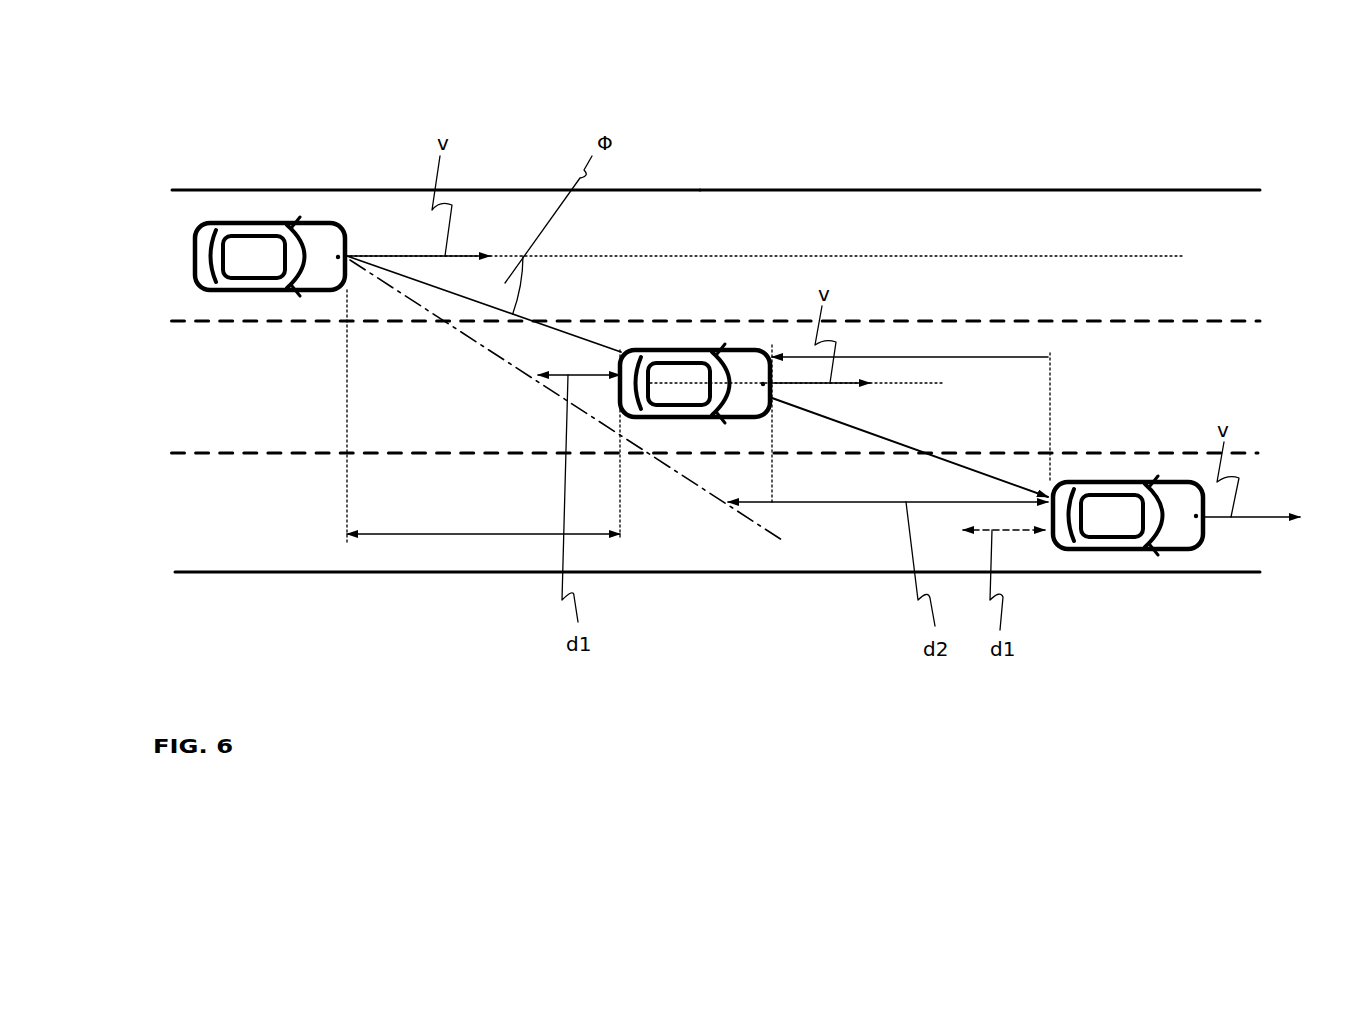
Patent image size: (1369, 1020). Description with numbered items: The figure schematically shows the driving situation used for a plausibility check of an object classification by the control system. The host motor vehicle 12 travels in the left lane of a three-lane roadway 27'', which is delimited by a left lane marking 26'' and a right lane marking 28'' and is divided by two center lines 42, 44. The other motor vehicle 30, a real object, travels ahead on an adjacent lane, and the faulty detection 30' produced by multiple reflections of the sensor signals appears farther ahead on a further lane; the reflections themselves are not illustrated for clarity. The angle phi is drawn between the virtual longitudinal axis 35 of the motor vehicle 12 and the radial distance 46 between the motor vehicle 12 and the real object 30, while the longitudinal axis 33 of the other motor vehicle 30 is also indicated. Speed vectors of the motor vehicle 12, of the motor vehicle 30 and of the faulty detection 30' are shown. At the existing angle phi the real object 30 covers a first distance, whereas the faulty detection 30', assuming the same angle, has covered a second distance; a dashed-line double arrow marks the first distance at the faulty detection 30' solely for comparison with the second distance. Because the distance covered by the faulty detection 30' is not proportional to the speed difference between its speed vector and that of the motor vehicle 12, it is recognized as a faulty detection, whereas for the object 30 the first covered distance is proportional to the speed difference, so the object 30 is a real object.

The host motor vehicle 12 is at (258, 223).
The left lane marking 26'' is at (401, 157).
The three-lane roadway 27'' is at (980, 156).
The right lane marking 28'' is at (684, 538).
The center line 42 is at (172, 321).
The center line 44 is at (172, 453).
The radial distance 46 is at (587, 338).
The other motor vehicle 30 is at (723, 269).
The faulty detection 30' is at (1128, 563).
The virtual longitudinal axis 35 is at (843, 256).
The longitudinal axis 33 is at (913, 383).